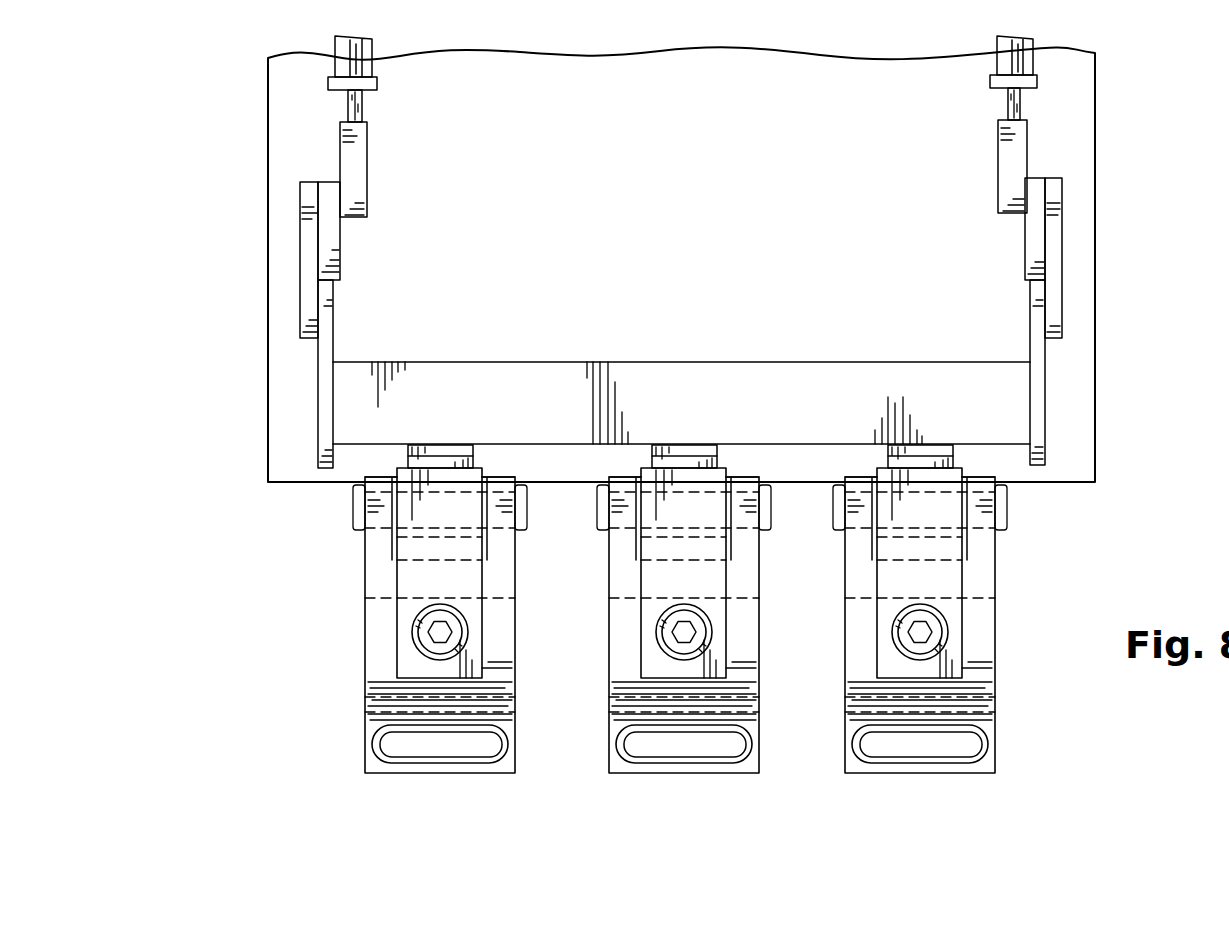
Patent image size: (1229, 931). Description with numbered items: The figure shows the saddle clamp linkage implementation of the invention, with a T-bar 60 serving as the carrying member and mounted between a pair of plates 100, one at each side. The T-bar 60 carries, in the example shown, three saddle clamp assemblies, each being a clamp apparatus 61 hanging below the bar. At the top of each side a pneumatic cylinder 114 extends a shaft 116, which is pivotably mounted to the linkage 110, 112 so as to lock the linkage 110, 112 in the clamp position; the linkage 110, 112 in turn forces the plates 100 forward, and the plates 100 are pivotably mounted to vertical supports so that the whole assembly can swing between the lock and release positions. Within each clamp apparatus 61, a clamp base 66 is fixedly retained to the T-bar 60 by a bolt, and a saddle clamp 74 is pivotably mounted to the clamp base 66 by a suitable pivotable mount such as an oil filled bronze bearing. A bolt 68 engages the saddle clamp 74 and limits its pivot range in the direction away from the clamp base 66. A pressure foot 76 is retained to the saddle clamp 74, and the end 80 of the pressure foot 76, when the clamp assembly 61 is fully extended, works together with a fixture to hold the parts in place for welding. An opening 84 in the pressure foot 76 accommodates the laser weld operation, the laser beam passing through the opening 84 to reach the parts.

The T-bar 60 is at (697, 377).
The clamp apparatus 61 is at (666, 639).
The clamp base 66 is at (407, 655).
The bolt 68 is at (430, 618).
The saddle clamp 74 is at (382, 558).
The pressure foot 76 is at (373, 705).
The end of pressure foot 80 is at (493, 768).
The opening 84 is at (418, 758).
The plates 100 is at (323, 380).
The linkage 110 is at (308, 292).
The linkage 112 is at (332, 238).
The pneumatic cylinder 114 is at (372, 63).
The shaft 116 is at (362, 101).